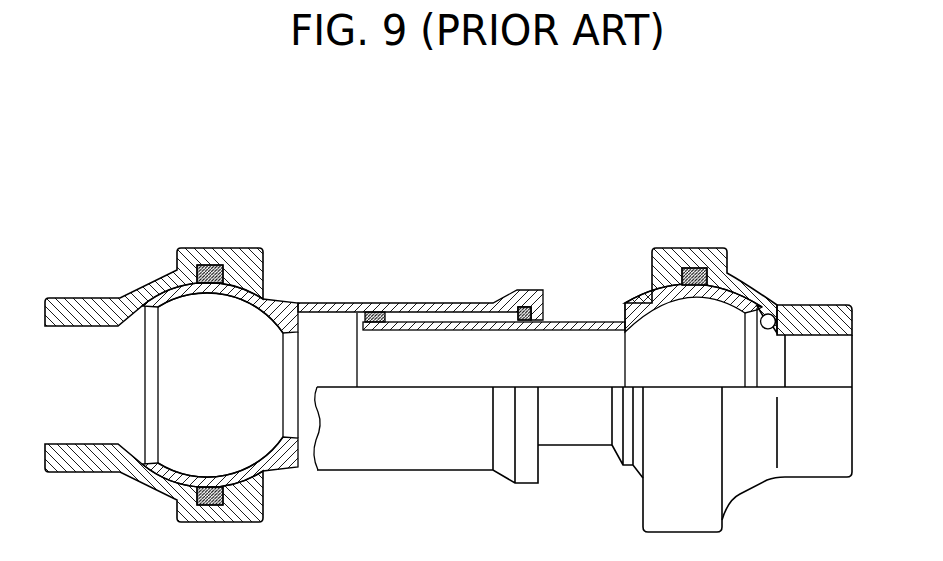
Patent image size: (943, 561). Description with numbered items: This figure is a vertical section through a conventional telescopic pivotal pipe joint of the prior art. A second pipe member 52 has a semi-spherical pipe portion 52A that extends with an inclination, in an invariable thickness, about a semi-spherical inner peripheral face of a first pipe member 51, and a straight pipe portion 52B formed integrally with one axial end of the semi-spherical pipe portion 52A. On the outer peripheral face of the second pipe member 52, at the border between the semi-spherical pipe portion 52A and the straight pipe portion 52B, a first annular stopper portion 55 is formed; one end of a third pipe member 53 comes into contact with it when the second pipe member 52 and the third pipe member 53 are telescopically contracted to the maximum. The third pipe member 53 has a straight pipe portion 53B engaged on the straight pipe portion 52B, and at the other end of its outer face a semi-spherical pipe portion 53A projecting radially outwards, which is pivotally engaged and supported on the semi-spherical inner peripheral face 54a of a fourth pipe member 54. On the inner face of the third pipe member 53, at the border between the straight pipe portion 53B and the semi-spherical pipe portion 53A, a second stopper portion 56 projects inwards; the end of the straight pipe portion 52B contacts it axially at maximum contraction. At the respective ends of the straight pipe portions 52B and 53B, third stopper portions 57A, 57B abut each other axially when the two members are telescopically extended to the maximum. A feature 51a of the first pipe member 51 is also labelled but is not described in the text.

The first pipe member 51 is at (805, 458).
The annular groove of shaft 51a is at (773, 328).
The second pipe member 52 is at (593, 433).
The semi-spherical pipe portion 52A is at (688, 298).
The straight pipe portion 52B is at (588, 326).
The third pipe member 53 is at (395, 455).
The semi-spherical pipe portion 53A is at (270, 302).
The straight pipe portion 53B is at (453, 302).
The fourth pipe member 54 is at (145, 492).
The semi-spherical inner peripheral face 54a is at (180, 475).
The first annular stopper portion 55 is at (637, 303).
The second stopper portion 56 is at (298, 318).
The third stopper portion 57A is at (386, 322).
The third stopper portion 57B is at (526, 304).